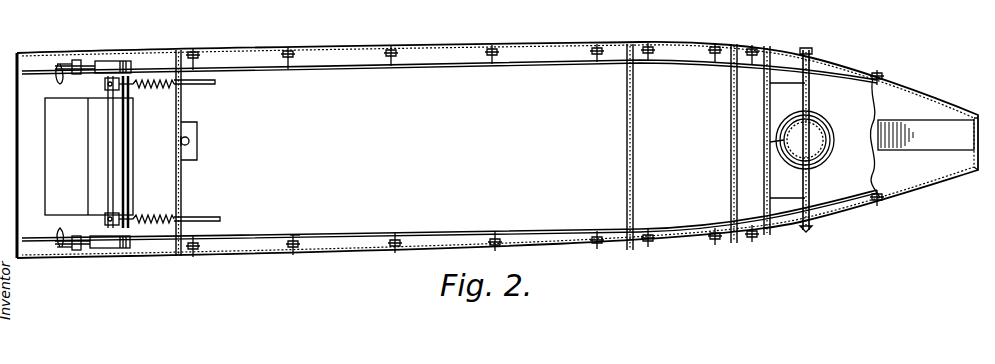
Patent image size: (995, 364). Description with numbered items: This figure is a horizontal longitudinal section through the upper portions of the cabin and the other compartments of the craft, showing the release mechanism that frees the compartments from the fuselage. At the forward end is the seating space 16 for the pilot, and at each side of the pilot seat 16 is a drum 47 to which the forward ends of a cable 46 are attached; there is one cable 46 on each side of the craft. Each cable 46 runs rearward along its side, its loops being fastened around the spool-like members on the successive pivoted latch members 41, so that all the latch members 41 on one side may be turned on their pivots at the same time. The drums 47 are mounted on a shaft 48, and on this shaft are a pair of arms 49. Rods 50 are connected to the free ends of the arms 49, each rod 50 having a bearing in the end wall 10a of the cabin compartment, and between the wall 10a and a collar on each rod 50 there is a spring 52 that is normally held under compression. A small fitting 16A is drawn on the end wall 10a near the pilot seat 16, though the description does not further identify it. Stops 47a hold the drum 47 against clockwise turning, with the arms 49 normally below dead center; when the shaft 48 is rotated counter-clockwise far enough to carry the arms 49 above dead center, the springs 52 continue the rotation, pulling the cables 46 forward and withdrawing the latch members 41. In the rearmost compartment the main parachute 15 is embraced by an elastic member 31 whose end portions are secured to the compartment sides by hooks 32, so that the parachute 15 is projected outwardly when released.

The end wall of the cabin compartment 10a is at (178, 107).
The main parachute 15 is at (828, 162).
The seating space for the pilot 16 is at (89, 156).
The bracket 16A is at (190, 139).
The elastic member 31 is at (810, 100).
The hooks 32 is at (812, 222).
The pivoted latch members 41 is at (298, 238).
The cable 46 is at (372, 66).
The drum 47 is at (96, 73).
The stops 47a is at (82, 61).
The shaft of the drums 48 is at (113, 149).
The arms 49 is at (125, 88).
The rods 50 is at (220, 219).
The spring 52 is at (174, 221).